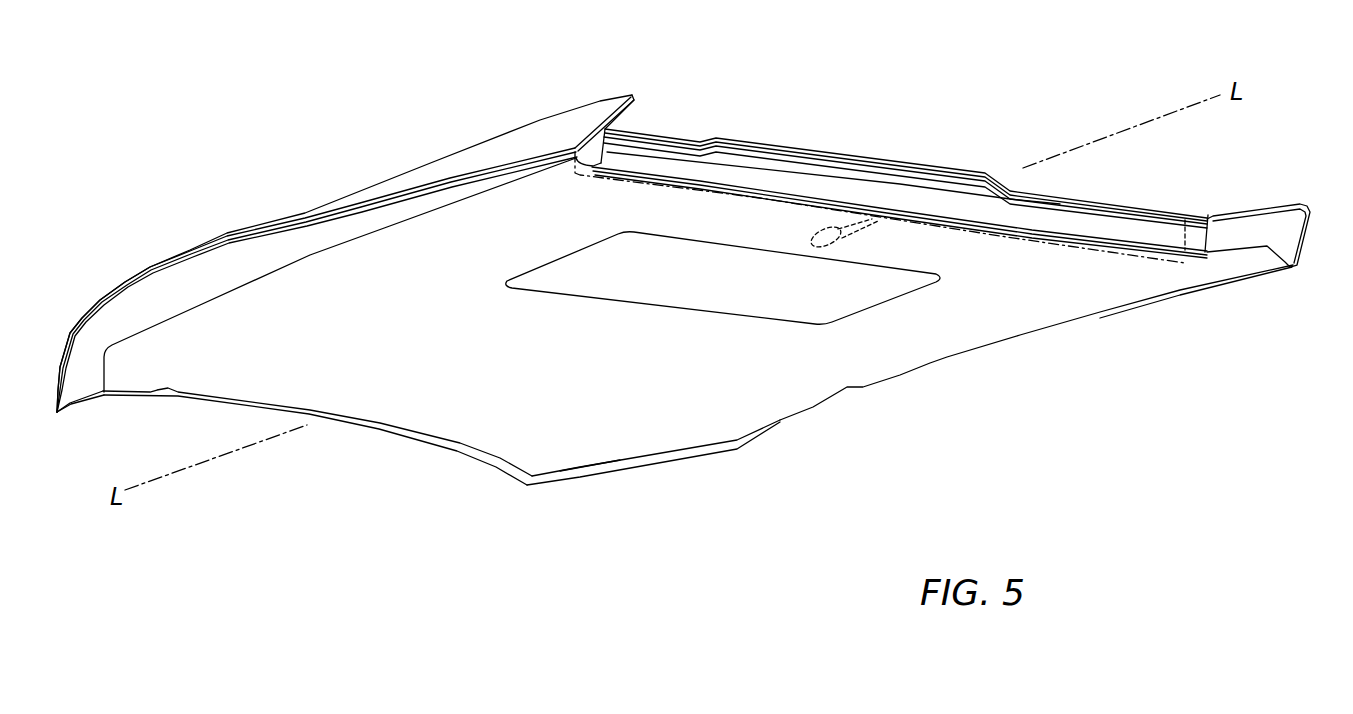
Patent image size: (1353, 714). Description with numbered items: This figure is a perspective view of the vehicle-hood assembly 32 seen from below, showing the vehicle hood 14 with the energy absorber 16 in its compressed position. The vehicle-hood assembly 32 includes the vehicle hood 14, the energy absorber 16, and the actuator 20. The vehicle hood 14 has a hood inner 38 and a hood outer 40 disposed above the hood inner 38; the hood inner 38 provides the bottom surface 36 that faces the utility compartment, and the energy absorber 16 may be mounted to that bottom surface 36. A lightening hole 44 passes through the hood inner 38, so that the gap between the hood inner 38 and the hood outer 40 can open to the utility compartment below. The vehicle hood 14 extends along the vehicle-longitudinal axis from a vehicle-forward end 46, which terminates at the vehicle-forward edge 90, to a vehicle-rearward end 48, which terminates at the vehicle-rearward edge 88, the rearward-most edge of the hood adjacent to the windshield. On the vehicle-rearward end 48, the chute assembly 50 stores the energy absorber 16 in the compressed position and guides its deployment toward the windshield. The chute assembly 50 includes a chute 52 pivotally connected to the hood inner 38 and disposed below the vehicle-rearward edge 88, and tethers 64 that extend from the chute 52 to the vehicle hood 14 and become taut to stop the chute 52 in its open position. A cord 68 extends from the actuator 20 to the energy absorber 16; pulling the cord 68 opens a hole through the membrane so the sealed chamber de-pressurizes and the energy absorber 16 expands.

The vehicle hood 14 is at (680, 463).
The energy absorber 16 is at (630, 187).
The actuator 20 is at (800, 240).
The vehicle-hood assembly 32 is at (593, 481).
The bottom surface 36 is at (497, 433).
The hood inner 38 is at (387, 227).
The hood outer 40 is at (433, 161).
The lightening hole 44 is at (540, 262).
The vehicle-forward end 46 is at (245, 365).
The vehicle-rearward end 48 is at (1097, 285).
The chute assembly 50 is at (1032, 236).
The chute 52 is at (1060, 240).
The tether 64 is at (604, 127).
The cord 68 is at (860, 232).
The vehicle-rearward edge 88 is at (1313, 213).
The vehicle-forward edge 90 is at (388, 432).